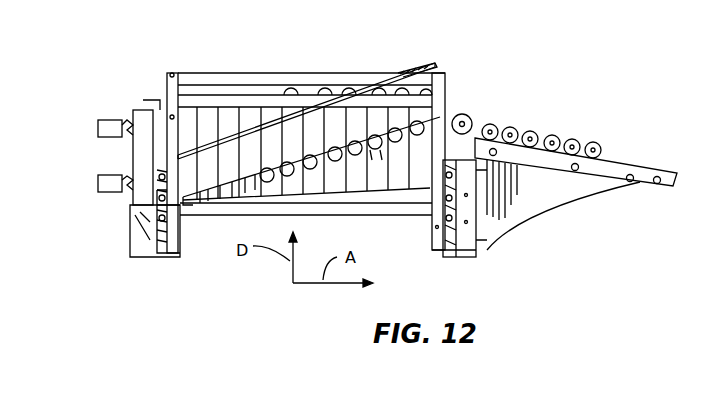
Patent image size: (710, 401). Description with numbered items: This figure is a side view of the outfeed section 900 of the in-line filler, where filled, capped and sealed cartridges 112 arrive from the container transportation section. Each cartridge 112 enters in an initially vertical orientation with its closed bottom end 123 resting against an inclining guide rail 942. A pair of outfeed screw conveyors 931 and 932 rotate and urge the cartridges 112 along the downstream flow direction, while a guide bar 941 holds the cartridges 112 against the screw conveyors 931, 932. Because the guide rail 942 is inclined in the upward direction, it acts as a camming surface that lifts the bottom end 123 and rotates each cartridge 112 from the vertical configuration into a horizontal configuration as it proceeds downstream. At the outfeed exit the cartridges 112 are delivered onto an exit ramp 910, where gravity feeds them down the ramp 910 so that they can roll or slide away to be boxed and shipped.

The outfeed section 900 is at (347, 57).
The guide bar 941 is at (275, 133).
The inclining guide rail 942 is at (215, 200).
The closed bottom end 123 is at (381, 156).
The outfeed screw conveyor 931 is at (99, 122).
The outfeed screw conveyor 932 is at (107, 182).
The filled, capped and sealed cartridge 112 is at (466, 115).
The exit ramp 910 is at (630, 160).